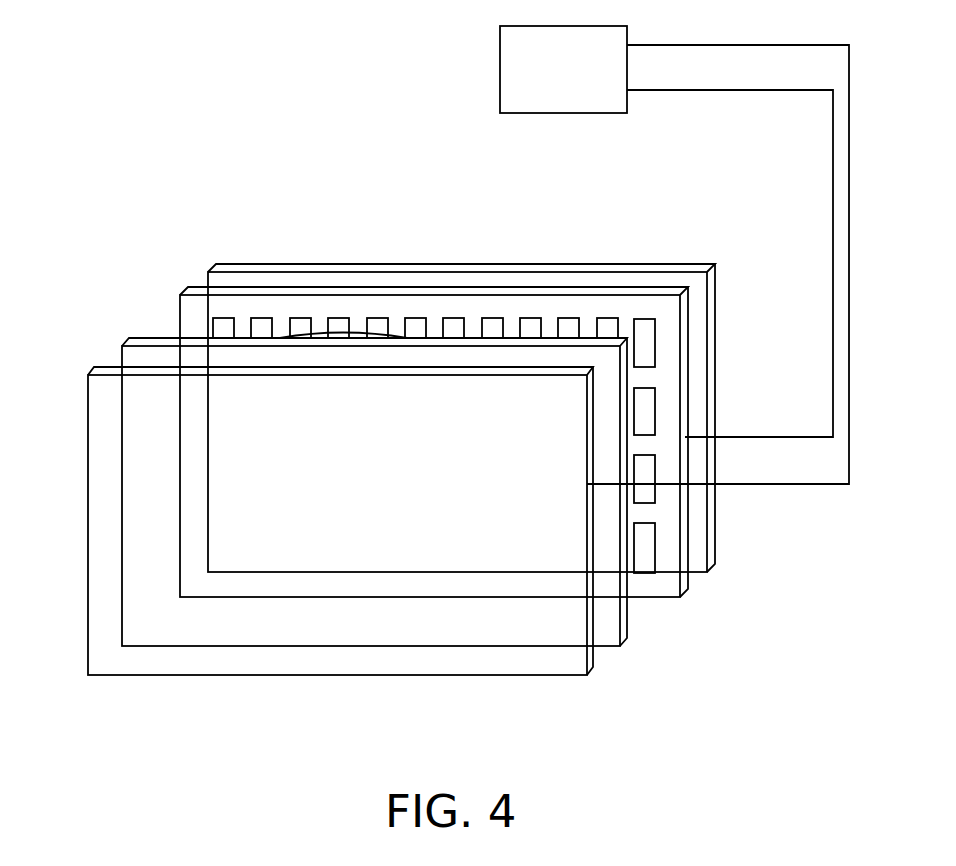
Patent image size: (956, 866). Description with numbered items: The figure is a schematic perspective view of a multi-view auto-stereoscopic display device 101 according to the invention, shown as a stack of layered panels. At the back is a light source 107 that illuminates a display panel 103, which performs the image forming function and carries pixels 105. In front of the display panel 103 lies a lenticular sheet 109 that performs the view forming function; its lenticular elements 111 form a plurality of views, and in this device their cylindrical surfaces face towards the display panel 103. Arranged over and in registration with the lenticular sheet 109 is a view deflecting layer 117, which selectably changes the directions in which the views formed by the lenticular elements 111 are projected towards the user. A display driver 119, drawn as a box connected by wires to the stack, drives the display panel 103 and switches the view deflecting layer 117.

The multi-view auto-stereoscopic display device 101 is at (147, 295).
The display panel 103 is at (688, 590).
The pixels 105 is at (648, 347).
The light source 107 is at (716, 558).
The lenticular sheet 109 is at (627, 644).
The lenticular elements 111 is at (323, 334).
The view deflecting layer 117 is at (593, 673).
The display driver 119 is at (505, 60).